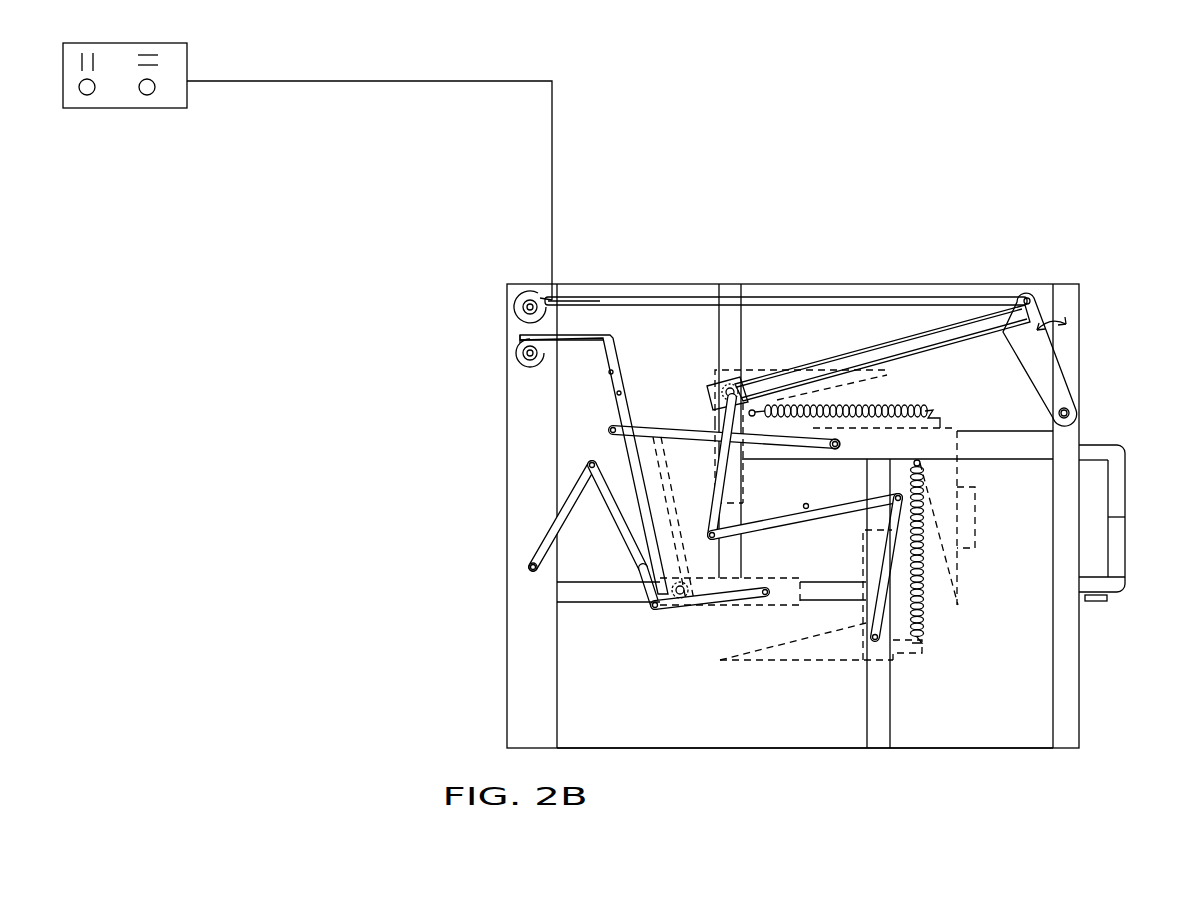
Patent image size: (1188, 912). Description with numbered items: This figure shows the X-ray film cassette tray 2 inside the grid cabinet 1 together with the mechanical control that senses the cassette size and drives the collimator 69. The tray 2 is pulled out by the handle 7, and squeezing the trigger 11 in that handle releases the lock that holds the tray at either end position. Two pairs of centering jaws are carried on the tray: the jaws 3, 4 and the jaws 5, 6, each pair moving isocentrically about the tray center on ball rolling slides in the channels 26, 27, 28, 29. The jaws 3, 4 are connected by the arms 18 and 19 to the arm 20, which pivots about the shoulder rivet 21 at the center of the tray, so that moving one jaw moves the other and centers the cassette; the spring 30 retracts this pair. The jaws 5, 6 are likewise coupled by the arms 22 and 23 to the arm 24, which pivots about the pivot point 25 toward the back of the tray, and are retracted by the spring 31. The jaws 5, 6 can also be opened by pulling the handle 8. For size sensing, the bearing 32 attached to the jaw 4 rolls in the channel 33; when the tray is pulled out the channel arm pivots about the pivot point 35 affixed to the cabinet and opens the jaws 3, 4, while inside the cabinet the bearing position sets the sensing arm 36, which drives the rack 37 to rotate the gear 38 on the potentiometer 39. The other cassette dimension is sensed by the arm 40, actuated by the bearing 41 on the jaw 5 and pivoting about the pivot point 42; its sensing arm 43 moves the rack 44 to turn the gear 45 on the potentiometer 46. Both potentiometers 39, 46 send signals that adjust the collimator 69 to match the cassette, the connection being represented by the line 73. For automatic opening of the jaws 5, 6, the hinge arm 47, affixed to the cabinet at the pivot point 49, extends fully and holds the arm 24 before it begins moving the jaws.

The grid cabinet 1 is at (528, 661).
The X-ray film cassette tray 2 is at (598, 703).
The jaw 3 is at (793, 655).
The jaw 4 is at (835, 374).
The jaw 5 is at (667, 490).
The jaw 6 is at (957, 468).
The handle 7 is at (1118, 497).
The handle 8 is at (975, 517).
The trigger 11 is at (1105, 601).
The arm 18 is at (880, 617).
The arm 19 is at (725, 452).
The arm 20 is at (786, 517).
The shoulder rivet 21 is at (806, 505).
The arm 22 is at (707, 597).
The arm 23 is at (633, 432).
The arm 24 is at (618, 447).
The pivot point 25 is at (636, 533).
The channel 26 is at (885, 706).
The channel 27 is at (732, 322).
The channel 28 is at (607, 596).
The channel 29 is at (1045, 446).
The spring 30 is at (918, 626).
The spring 31 is at (1045, 357).
The bearing 32 is at (723, 388).
The channel 33 is at (770, 385).
The pivot point 35 is at (1066, 412).
The sensing arm 36 is at (877, 297).
The rack 37 is at (542, 277).
The gear 38 is at (527, 307).
The potentiometer 39 is at (548, 305).
The arm 40 is at (604, 370).
The bearing 41 is at (685, 587).
The pivot point 42 is at (626, 392).
The sensing arm 43 is at (590, 345).
The rack 44 is at (521, 343).
The gear 45 is at (527, 362).
The potentiometer 46 is at (614, 505).
The hinge arm 47 is at (556, 529).
The pivot point 49 is at (537, 568).
The collimator 69 is at (190, 56).
The cable 73 is at (553, 125).